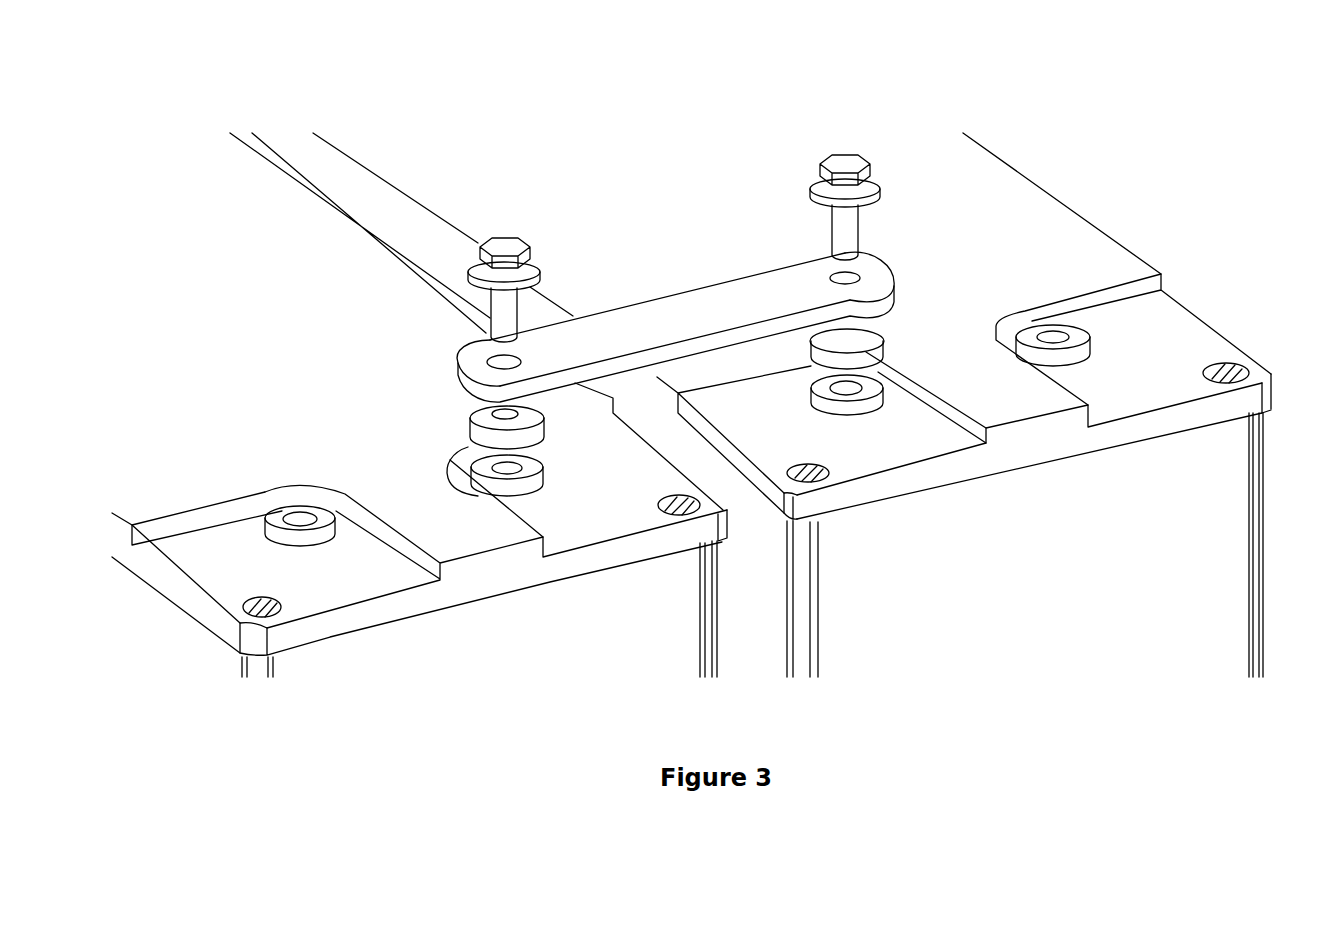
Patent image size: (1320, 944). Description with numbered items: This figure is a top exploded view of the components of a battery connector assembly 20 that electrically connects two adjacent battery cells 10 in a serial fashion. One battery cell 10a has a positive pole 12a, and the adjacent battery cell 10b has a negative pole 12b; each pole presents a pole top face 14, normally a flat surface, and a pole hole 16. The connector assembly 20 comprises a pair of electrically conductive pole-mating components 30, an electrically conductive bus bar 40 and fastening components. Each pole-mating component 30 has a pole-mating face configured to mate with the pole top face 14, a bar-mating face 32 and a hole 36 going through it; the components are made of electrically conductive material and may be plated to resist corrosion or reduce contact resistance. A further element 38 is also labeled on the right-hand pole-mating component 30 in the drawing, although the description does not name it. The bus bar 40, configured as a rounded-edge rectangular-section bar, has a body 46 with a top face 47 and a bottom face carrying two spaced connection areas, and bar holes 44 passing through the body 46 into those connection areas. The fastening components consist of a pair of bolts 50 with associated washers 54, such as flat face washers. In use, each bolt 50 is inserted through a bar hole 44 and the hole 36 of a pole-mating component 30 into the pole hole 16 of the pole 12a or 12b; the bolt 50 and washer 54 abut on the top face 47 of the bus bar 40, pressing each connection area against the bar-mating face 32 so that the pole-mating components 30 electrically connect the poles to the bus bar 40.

The battery cell 10 is at (226, 303).
The battery cell 10a is at (180, 167).
The adjacent battery cell 10b is at (970, 187).
The positive pole 12a is at (530, 488).
The negative pole 12b is at (865, 408).
The pole top face 14 is at (450, 466).
The pole hole 16 is at (505, 474).
The battery connector assembly 20 is at (714, 273).
The electrically conductive pole-mating component 30 is at (537, 441).
The bar-mating face 32 is at (528, 422).
The hole 36 is at (501, 414).
The conductive washer 38 is at (853, 333).
The electrically conductive bus bar 40 is at (678, 313).
The bar hole 44 is at (496, 364).
The body 46 is at (478, 363).
The top face 47 is at (869, 277).
The bolt 50 is at (506, 243).
The washer 54 is at (474, 270).